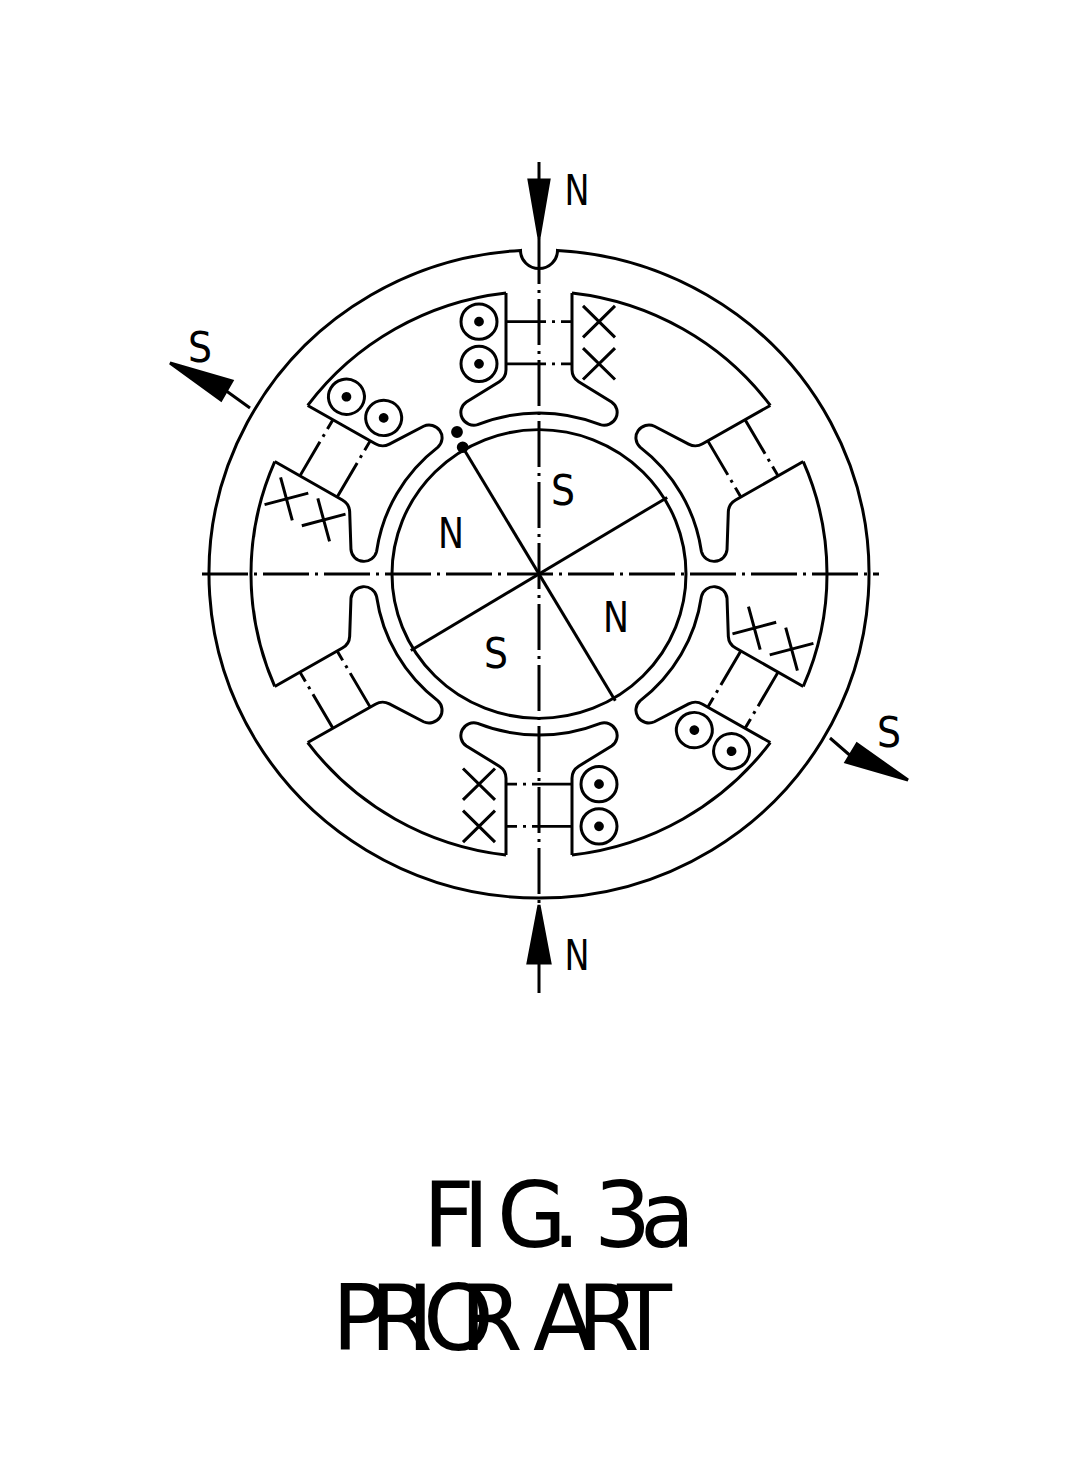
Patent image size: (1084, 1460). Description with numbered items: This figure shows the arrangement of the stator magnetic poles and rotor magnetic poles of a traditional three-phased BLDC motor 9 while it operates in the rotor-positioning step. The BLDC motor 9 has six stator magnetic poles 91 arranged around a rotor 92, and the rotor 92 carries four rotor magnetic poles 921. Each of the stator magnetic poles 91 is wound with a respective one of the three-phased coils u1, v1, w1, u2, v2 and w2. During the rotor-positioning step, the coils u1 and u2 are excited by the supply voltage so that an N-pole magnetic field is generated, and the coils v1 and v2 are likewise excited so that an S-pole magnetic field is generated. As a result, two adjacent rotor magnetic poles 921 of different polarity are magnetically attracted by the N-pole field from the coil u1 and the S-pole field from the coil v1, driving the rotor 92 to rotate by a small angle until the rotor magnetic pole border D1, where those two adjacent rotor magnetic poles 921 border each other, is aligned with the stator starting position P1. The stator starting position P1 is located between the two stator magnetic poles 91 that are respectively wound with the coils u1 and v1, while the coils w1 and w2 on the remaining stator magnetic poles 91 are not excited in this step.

The BLDC motor 9 is at (281, 283).
The stator magnetic pole 91 is at (673, 443).
The rotor 92 is at (353, 581).
The rotor magnetic pole 921 is at (462, 670).
The coil u1 is at (515, 322).
The coil u2 is at (528, 827).
The coil v1 is at (318, 441).
The coil v2 is at (762, 700).
The coil w1 is at (318, 704).
The coil w2 is at (762, 442).
The rotor magnetic pole border D1 is at (463, 447).
The stator starting position P1 is at (457, 432).